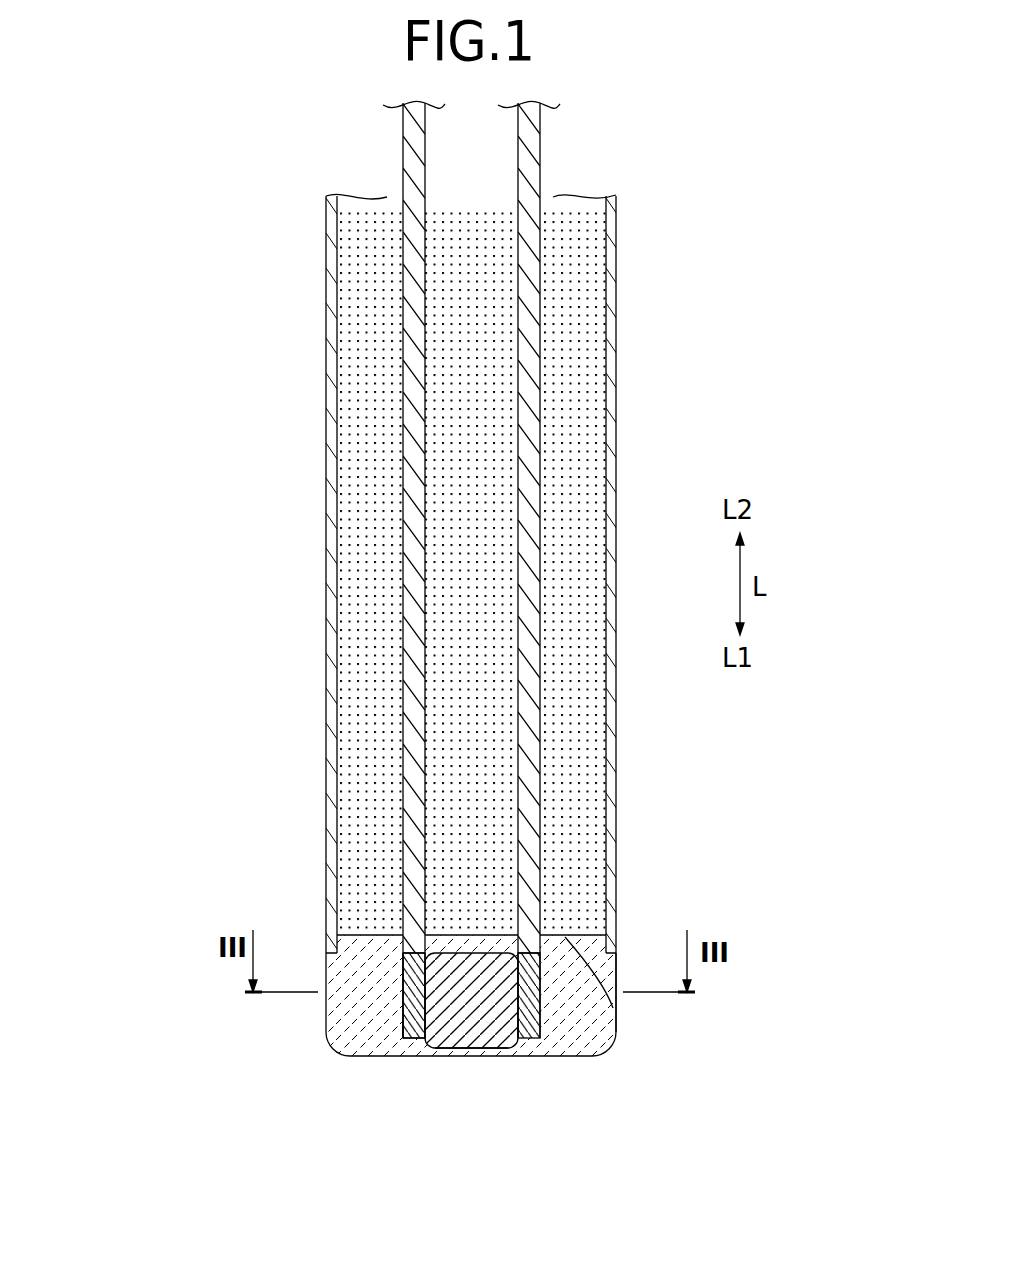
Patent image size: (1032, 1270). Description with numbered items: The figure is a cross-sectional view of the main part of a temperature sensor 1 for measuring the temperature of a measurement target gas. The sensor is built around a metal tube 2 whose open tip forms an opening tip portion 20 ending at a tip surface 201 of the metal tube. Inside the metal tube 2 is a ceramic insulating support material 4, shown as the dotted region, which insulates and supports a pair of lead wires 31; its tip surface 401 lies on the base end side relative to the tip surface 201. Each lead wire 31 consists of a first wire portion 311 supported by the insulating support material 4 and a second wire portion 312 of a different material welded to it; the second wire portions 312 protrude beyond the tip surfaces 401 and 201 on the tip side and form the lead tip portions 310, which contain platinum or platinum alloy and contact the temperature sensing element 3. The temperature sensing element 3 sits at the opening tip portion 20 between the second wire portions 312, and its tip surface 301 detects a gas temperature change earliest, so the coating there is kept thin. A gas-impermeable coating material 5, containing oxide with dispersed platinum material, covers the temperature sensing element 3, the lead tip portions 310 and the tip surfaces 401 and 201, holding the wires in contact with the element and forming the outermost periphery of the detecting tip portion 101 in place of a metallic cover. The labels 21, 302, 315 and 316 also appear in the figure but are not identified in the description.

The temperature sensor 1 is at (297, 244).
The metal tube 2 is at (330, 667).
The tube body 21 is at (400, 614).
The opening tip portion 20 is at (332, 953).
The tip surface of the metal tube 201 is at (613, 1008).
The temperature sensing element 3 is at (483, 1013).
The tip surface of the temperature sensing element 301 is at (488, 1048).
The side surface of sensing element 302 is at (403, 982).
The lead wires 31 is at (417, 810).
The first wire portions 311 is at (537, 840).
The lead tip portion 310 is at (315, 1025).
The second wire portions 312 is at (403, 1015).
The lower end of lead wire 315 is at (412, 1040).
The side surface of lead wire 316 is at (540, 1012).
The insulating support material 4 is at (370, 531).
The tip surface of the insulating support material 401 is at (614, 1008).
The coating material 5 is at (365, 1005).
The detecting tip portion 101 is at (333, 1073).